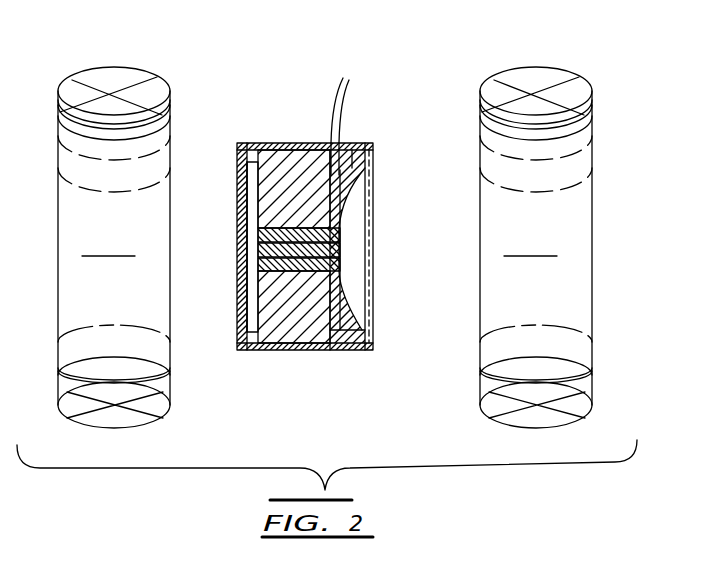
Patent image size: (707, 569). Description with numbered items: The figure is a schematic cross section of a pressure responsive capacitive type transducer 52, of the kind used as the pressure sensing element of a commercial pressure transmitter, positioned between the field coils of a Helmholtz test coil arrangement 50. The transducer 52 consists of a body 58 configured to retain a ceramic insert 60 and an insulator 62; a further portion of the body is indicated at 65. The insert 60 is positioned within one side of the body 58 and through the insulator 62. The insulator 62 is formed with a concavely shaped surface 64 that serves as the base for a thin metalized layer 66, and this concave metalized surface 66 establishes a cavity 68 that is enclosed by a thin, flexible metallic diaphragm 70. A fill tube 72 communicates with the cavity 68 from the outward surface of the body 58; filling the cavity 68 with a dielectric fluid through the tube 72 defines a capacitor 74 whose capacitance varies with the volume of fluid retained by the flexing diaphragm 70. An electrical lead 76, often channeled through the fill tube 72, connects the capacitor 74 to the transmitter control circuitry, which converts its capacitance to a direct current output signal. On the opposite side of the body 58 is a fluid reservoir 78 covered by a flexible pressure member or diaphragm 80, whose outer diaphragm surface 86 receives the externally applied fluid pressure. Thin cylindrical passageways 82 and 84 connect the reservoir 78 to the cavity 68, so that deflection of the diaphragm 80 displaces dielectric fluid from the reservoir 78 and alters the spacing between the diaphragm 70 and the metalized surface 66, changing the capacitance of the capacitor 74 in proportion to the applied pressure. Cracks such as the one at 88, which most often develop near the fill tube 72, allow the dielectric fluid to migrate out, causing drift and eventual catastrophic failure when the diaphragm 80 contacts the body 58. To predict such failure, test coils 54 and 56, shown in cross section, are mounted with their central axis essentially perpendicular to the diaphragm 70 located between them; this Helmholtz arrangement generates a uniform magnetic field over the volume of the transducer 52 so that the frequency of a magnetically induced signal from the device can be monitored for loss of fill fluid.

The detector assembly 50 is at (703, 96).
The pressure responsive capacitive type transducer 52 is at (309, 237).
The test coil 54 is at (550, 66).
The test coil 56 is at (128, 68).
The body 58 is at (282, 352).
The ceramic insert 60 is at (262, 227).
The insulator 62 is at (343, 340).
The concavely shaped surface 64 is at (330, 350).
The housing top wall 65 is at (270, 143).
The metalized layer 66 is at (340, 320).
The cavity 68 is at (352, 230).
The diaphragm 70 is at (367, 265).
The fill tube 72 is at (350, 150).
The capacitor 74 is at (388, 334).
The electrical lead 76 is at (342, 122).
The fluid reservoir 78 is at (240, 170).
The diaphragm 80 is at (246, 205).
The cylindrical passageway 82 is at (262, 242).
The cylindrical passageway 84 is at (262, 258).
The diaphragm surface 86 is at (240, 320).
The crack 88 is at (353, 99).